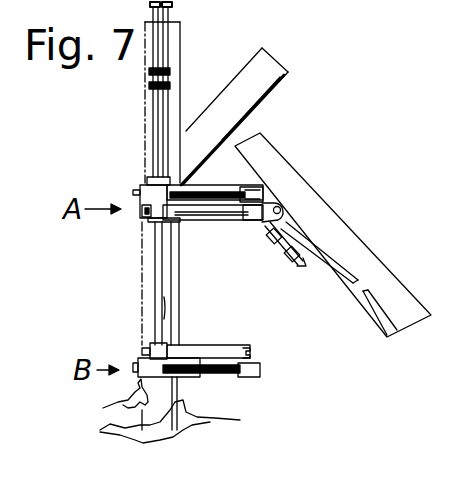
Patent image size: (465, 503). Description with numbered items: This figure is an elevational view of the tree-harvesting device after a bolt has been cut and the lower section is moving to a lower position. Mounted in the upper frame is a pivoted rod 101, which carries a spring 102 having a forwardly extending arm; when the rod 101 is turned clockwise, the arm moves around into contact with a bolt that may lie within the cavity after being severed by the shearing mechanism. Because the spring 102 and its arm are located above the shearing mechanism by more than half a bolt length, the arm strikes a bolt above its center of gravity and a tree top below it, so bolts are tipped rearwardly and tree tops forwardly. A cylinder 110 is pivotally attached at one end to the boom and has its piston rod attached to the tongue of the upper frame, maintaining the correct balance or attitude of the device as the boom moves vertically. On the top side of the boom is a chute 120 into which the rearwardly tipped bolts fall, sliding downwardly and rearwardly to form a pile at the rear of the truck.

The pivoted rod 101 is at (185, 114).
The spring 102 is at (154, 98).
The cylinder 110 is at (285, 250).
The chute 120 is at (305, 198).